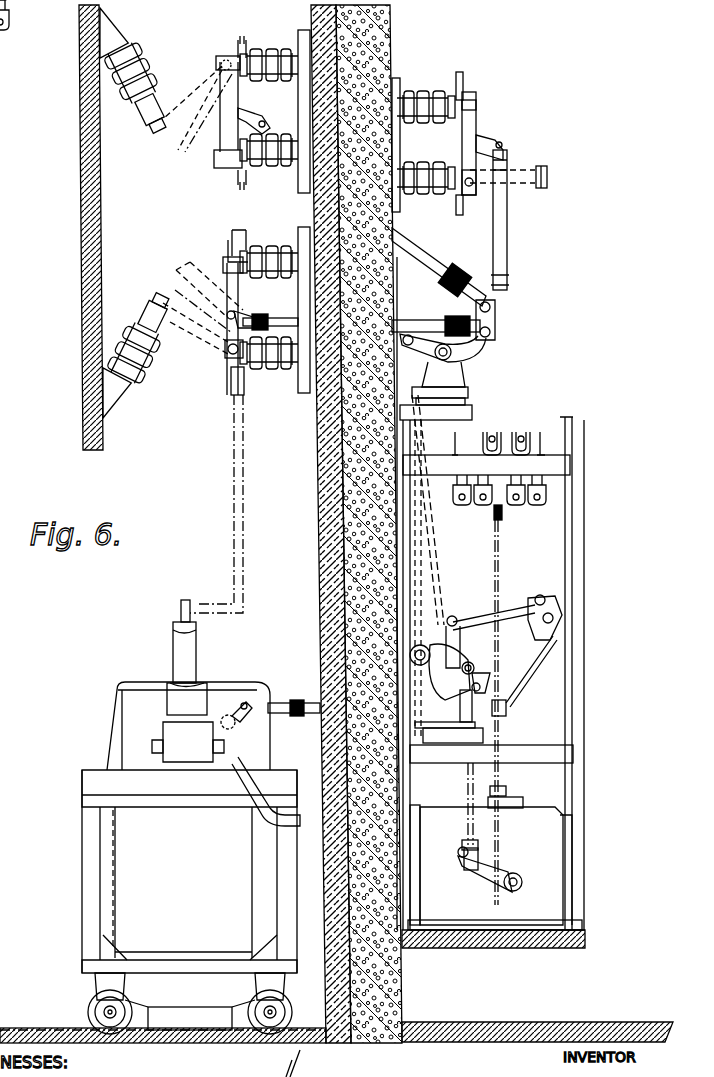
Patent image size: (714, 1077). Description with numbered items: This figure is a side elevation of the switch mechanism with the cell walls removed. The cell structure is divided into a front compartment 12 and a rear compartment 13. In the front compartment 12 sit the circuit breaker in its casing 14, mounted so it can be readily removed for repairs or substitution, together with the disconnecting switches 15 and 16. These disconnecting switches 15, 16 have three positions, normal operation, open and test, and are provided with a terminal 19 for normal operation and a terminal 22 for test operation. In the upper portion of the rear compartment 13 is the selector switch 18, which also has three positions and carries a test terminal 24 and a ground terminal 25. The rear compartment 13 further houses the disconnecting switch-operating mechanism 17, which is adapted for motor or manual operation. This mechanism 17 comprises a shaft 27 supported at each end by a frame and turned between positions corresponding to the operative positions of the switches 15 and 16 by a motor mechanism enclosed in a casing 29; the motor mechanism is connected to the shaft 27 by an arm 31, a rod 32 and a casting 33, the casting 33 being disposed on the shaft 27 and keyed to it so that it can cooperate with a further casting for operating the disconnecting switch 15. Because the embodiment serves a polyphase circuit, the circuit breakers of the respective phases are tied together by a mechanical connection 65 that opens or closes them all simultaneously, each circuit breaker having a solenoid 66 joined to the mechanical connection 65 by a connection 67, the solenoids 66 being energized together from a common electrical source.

The front compartment 12 is at (76, 503).
The rear compartment 13 is at (562, 381).
The casing 14 is at (199, 876).
The disconnecting switch 15 is at (214, 259).
The disconnecting switch 16 is at (216, 45).
The disconnecting switch-operating mechanism 17 is at (617, 677).
The selector switch 18 is at (565, 125).
The terminal 19 is at (229, 232).
The terminal 22 is at (163, 279).
The test terminal 24 is at (475, 103).
The ground terminal 25 is at (541, 168).
The shaft 27 is at (154, 128).
The casing 29 is at (548, 860).
The arm 31 is at (473, 873).
The rod 32 is at (456, 768).
The casting 33 is at (440, 620).
The mechanical connection 65 is at (516, 426).
The solenoid 66 is at (520, 800).
The connection 67 is at (503, 574).